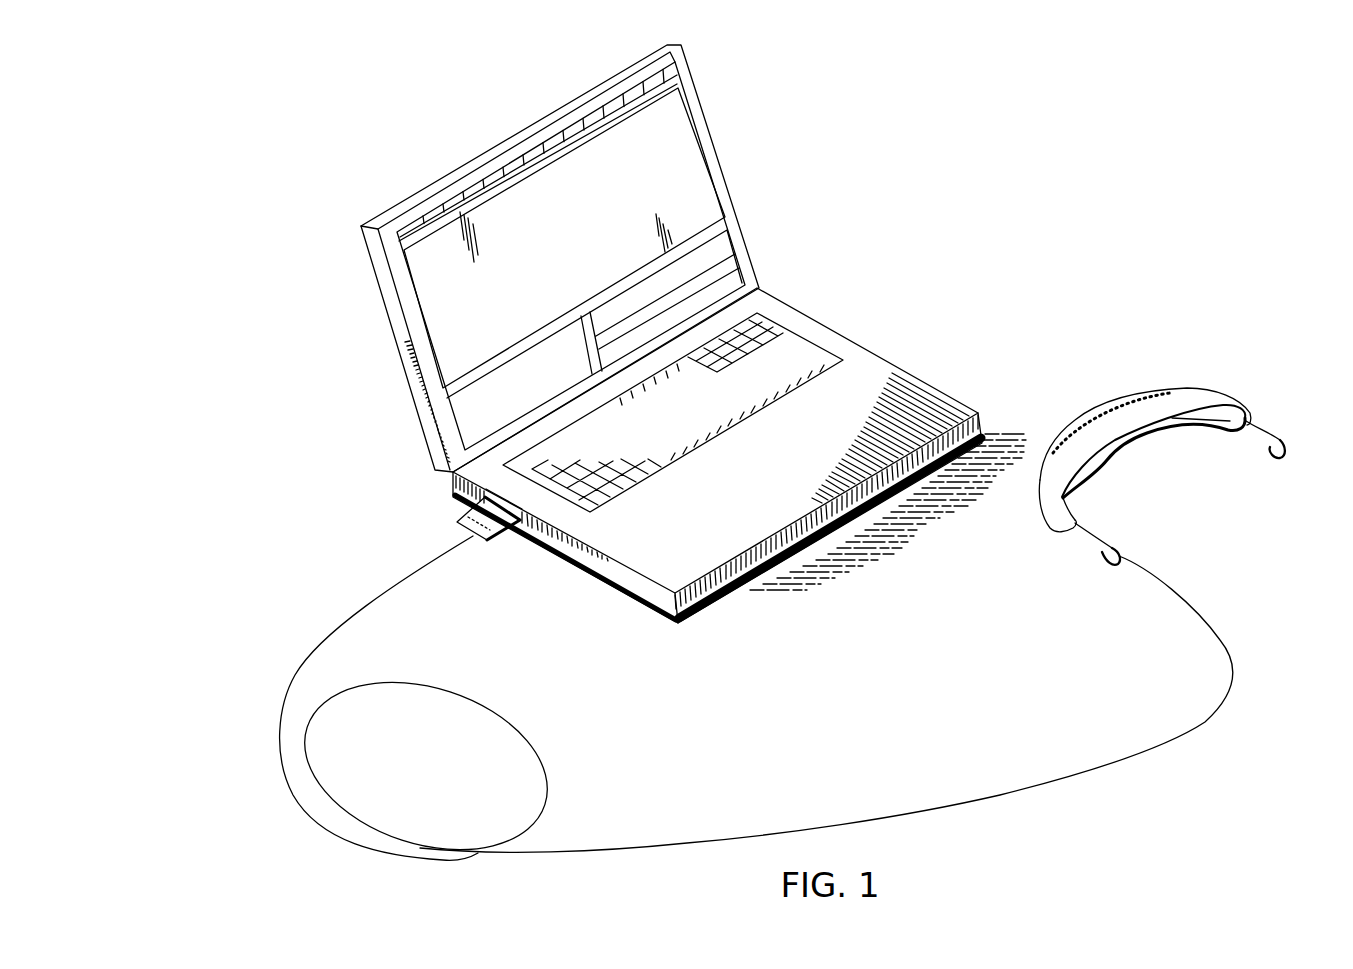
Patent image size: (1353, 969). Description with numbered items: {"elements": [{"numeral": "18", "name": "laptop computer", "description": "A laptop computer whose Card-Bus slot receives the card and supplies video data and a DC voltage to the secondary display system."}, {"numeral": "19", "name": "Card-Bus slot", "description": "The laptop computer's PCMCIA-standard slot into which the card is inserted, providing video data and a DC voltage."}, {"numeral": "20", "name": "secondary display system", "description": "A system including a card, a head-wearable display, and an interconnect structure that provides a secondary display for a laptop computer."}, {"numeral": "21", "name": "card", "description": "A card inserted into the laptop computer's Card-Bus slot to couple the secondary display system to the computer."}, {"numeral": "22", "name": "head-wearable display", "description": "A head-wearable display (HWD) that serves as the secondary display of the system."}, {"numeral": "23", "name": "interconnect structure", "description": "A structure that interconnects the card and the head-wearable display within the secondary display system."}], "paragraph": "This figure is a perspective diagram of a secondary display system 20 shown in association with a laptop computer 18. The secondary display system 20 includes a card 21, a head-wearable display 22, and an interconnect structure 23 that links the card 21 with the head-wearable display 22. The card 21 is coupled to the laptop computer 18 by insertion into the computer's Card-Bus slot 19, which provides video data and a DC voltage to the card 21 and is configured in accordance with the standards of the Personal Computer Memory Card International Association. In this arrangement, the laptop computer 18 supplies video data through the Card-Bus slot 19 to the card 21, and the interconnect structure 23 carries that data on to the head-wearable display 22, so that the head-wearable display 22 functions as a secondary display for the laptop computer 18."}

The portable computer 18 is at (684, 353).
The card slot 19 is at (470, 506).
The portable computer system 20 is at (729, 462).
The interface card 21 is at (490, 555).
The head-mounted display 22 is at (1188, 388).
The cable 23 is at (545, 748).